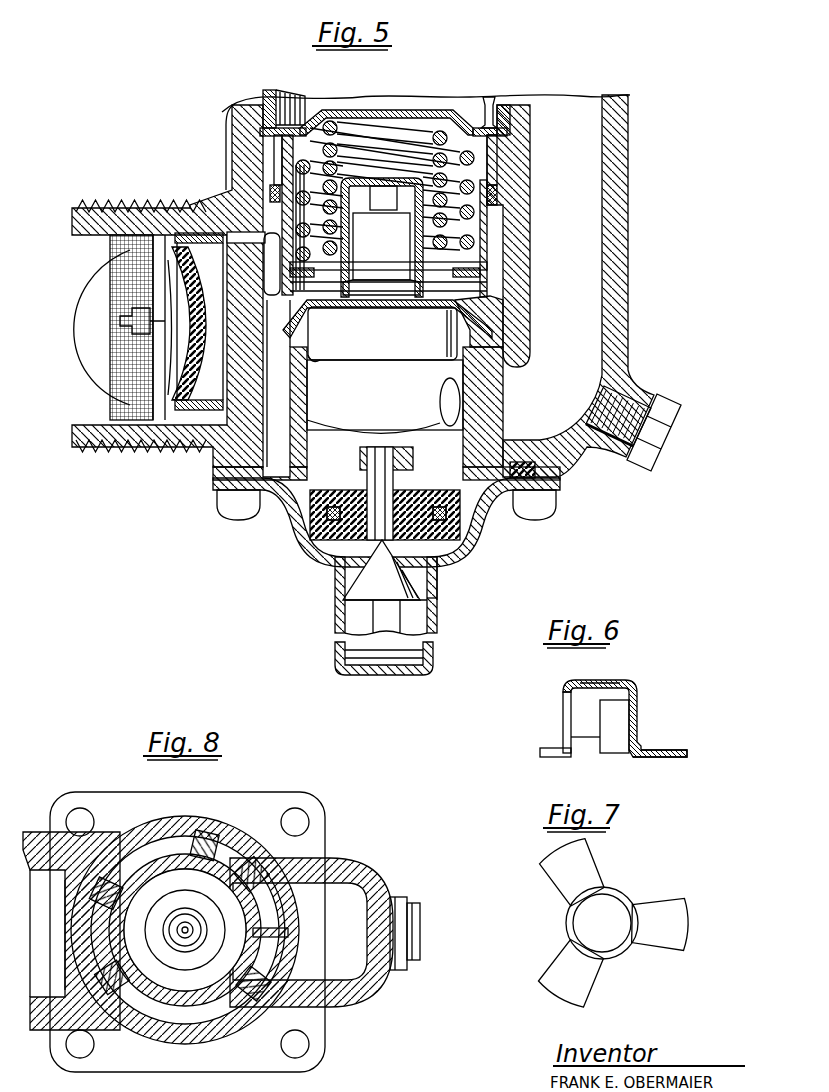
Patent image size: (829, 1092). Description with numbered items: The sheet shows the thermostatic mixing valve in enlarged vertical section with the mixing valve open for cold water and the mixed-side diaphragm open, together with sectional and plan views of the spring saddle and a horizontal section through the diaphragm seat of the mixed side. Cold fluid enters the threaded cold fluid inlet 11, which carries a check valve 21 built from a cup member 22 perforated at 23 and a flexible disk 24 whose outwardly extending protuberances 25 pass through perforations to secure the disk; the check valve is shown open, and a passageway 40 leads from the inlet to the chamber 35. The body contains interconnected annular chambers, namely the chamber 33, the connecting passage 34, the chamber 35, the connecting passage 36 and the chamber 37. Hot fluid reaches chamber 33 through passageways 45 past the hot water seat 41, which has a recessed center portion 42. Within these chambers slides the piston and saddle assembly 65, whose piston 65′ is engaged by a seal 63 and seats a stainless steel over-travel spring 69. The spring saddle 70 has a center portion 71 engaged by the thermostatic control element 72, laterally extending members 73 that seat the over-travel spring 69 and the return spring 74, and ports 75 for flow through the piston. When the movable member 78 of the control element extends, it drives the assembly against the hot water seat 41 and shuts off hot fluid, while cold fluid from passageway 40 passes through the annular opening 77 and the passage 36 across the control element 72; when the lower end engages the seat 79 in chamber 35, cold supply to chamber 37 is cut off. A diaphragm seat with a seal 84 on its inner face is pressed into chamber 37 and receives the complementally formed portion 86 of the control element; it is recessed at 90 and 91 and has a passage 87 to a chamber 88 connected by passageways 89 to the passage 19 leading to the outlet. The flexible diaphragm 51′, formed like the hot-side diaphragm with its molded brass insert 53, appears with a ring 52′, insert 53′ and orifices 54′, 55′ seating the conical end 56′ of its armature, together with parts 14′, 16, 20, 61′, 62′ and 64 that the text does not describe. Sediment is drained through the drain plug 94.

In FIG. 5, the cold fluid inlet 11 is at (96, 414).
In FIG. 8, the cold fluid inlet 11 is at (45, 992).
In FIG. 5, the retaining ring 14′ is at (436, 638).
In FIG. 5, the flange 16 is at (242, 515).
In FIG. 5, the passage 19 is at (545, 345).
In FIG. 8, the passage 19 is at (368, 952).
In FIG. 5, the strainer element 20 is at (92, 342).
In FIG. 5, the cold fluid check valve assembly 21 is at (219, 342).
In FIG. 5, the cup member 22 is at (213, 403).
In FIG. 5, the perforations 23 is at (177, 268).
In FIG. 5, the flexible disk 24 is at (195, 290).
In FIG. 5, the protuberances 25 is at (150, 331).
In FIG. 5, the chamber 33 is at (496, 165).
In FIG. 5, the connecting passage 34 is at (490, 237).
In FIG. 5, the chamber 35 is at (506, 268).
In FIG. 5, the connecting passage 36 is at (506, 313).
In FIG. 5, the chamber 37 is at (504, 330).
In FIG. 5, the passageway 40 is at (258, 240).
In FIG. 5, the hot water seat 41 is at (296, 133).
In FIG. 5, the recessed center portion 42 is at (393, 112).
In FIG. 5, the passageways 45 is at (290, 108).
In FIG. 5, the flexible diaphragm 51′ is at (335, 550).
In FIG. 8, the flexible diaphragm 51′ is at (198, 905).
In FIG. 5, the flange 52′ is at (537, 480).
In FIG. 5, the stem 53′ is at (404, 460).
In FIG. 5, the nut 54′ is at (380, 458).
In FIG. 5, the cone 55′ is at (394, 538).
In FIG. 5, the nut 56′ is at (395, 586).
In FIG. 5, the wall 61′ is at (422, 577).
In FIG. 5, the recess 62′ is at (430, 594).
In FIG. 5, the seal 63 is at (506, 205).
In FIG. 5, the nut 64 is at (499, 192).
In FIG. 5, the piston and saddle assembly 65 is at (489, 253).
In FIG. 5, the piston 65′ is at (483, 126).
In FIG. 5, the over-travel spring 69 is at (296, 163).
In FIG. 6, the spring saddle 70 is at (567, 683).
In FIG. 7, the spring saddle 70 is at (612, 931).
In FIG. 6, the center portion 71 is at (622, 680).
In FIG. 5, the thermostatic control element 72 is at (386, 353).
In FIG. 6, the laterally extending members 73 is at (560, 752).
In FIG. 7, the laterally extending members 73 is at (563, 887).
In FIG. 5, the return spring 74 is at (355, 122).
In FIG. 5, the ports 75 is at (350, 229).
In FIG. 6, the ports 75 is at (569, 726).
In FIG. 5, the opening 77 is at (283, 300).
In FIG. 5, the movable member 78 is at (392, 208).
In FIG. 5, the seat 79 is at (490, 298).
In FIG. 5, the seal 84 is at (313, 362).
In FIG. 5, the complementally formed portion 86 is at (376, 395).
In FIG. 8, the passage 87 is at (162, 906).
In FIG. 8, the chamber 88 is at (218, 985).
In FIG. 5, the passageways 89 is at (505, 384).
In FIG. 8, the passageways 89 is at (263, 884).
In FIG. 5, the recess 90 is at (290, 424).
In FIG. 8, the recess 90 is at (105, 942).
In FIG. 8, the recess 91 is at (228, 832).
In FIG. 5, the drain plug 94 is at (655, 448).
In FIG. 8, the drain plug 94 is at (412, 960).
In FIG. 8, the brass insert 53 is at (197, 933).